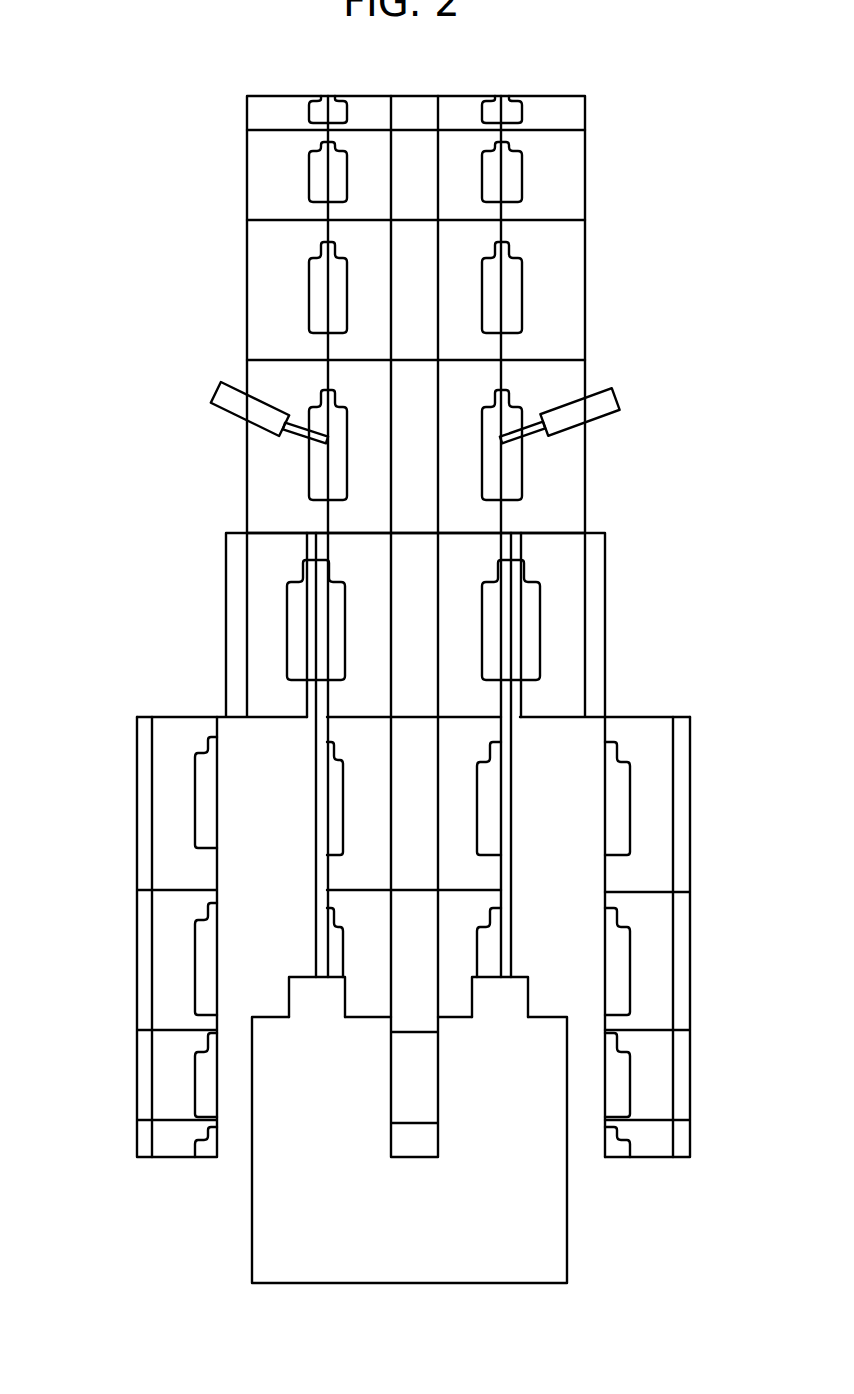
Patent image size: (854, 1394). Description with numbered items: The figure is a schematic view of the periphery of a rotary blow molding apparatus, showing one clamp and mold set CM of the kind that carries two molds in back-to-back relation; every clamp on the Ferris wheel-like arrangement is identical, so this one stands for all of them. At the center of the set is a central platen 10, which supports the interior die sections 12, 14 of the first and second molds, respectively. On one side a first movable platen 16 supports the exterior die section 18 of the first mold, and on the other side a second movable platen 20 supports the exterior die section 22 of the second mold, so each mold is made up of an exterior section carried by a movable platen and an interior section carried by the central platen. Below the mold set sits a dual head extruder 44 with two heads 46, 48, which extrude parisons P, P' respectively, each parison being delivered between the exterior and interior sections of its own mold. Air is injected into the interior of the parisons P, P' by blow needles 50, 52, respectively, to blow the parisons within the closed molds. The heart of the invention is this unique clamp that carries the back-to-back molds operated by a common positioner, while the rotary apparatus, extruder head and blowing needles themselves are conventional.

The clamp and mold set CM is at (585, 194).
The central platen 10 is at (427, 813).
The interior die section 12 is at (472, 764).
The interior die section 14 is at (377, 766).
The first movable platen 16 is at (688, 772).
The exterior die section 18 is at (652, 808).
The second movable platen 20 is at (137, 753).
The exterior die section 22 is at (173, 800).
The dual head extruder 44 is at (425, 1228).
The head 46 is at (302, 982).
The head 48 is at (512, 982).
The blow needle 50 is at (233, 381).
The blow needle 52 is at (600, 390).
The parison P is at (302, 859).
The parison P' is at (520, 859).